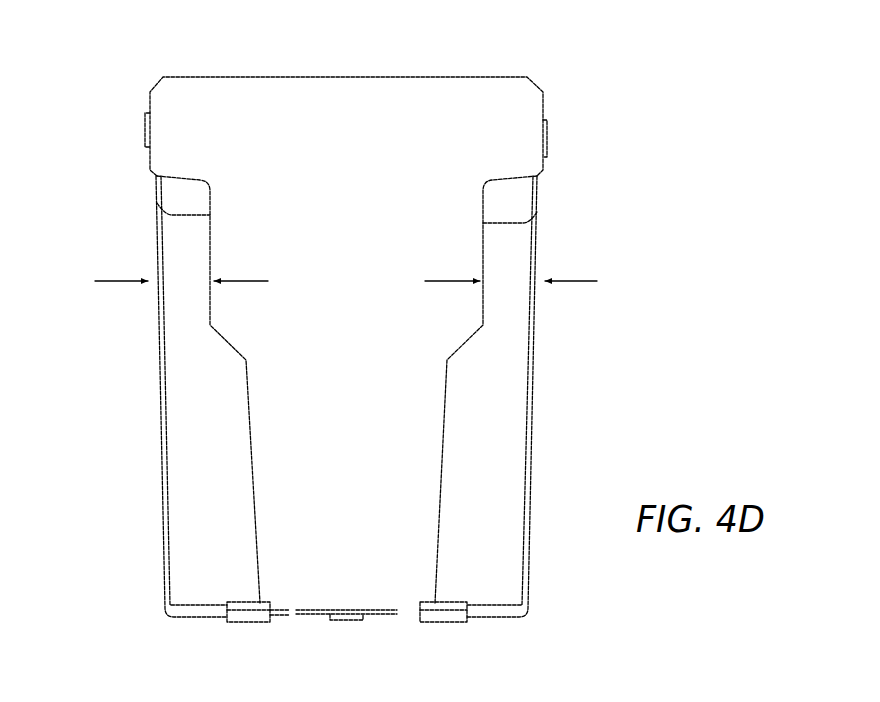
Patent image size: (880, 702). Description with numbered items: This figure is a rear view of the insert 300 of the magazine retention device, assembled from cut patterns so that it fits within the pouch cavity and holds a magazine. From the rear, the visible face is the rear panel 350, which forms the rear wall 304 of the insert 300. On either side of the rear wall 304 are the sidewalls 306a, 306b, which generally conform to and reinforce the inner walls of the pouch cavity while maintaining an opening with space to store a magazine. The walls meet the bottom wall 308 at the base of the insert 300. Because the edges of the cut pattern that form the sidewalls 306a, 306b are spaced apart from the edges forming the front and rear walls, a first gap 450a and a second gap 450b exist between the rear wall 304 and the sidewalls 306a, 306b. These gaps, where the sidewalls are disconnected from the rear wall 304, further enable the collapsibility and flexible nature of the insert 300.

The insert 300 is at (531, 49).
The rear panel 350 is at (84, 134).
The sidewall 306a is at (535, 403).
The sidewall 306b is at (157, 403).
The rear wall 304 is at (250, 484).
The bottom wall 308 is at (200, 618).
The first gap 450a is at (541, 280).
The second gap 450b is at (155, 280).